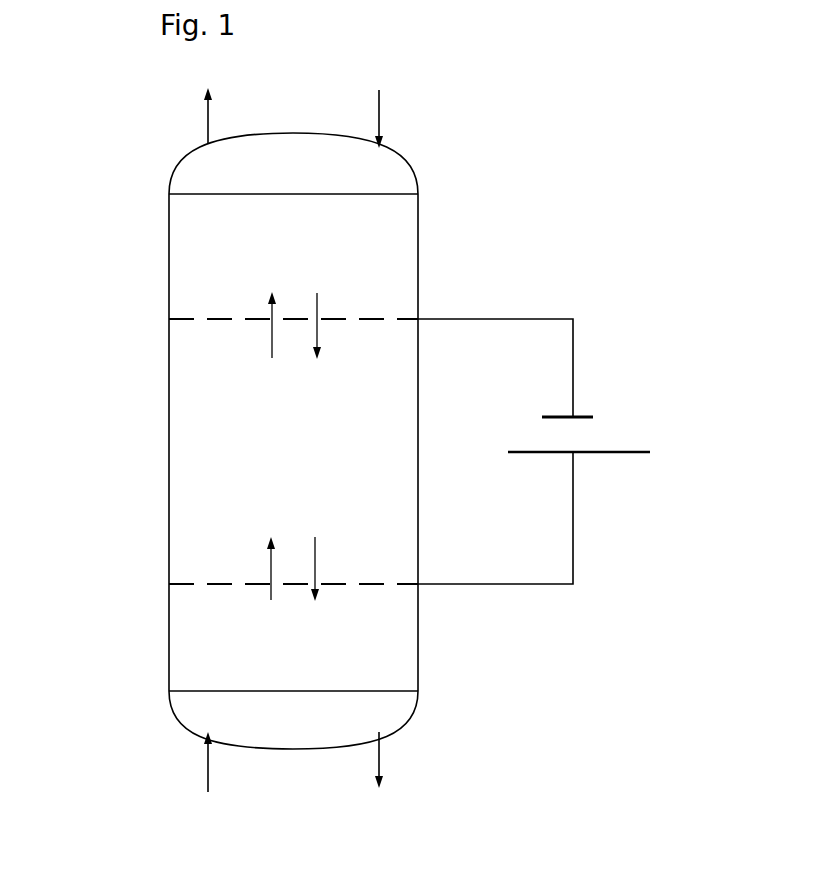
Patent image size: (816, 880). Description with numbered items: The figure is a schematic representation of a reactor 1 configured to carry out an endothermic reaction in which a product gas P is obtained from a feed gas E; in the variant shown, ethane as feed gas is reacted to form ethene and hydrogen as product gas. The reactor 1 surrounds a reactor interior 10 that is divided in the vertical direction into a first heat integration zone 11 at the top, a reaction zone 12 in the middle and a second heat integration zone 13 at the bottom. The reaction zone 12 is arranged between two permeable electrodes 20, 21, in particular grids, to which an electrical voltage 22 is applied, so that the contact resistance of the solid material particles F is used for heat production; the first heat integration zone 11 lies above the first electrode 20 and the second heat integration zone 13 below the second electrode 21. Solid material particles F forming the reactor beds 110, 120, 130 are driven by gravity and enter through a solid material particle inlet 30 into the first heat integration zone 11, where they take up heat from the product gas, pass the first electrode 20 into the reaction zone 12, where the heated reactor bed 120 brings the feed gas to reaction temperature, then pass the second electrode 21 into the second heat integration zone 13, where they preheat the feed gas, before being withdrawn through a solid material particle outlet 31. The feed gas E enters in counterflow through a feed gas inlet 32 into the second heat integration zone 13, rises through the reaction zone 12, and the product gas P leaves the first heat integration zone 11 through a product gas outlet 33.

The reactor 1 is at (114, 222).
The reactor interior 10 is at (276, 255).
The first heat integration zone 11 is at (367, 248).
The reactor bed 110 is at (365, 300).
The reaction zone 12 is at (360, 397).
The reactor bed 120 is at (383, 488).
The second heat integration zone 13 is at (377, 633).
The reactor bed 130 is at (360, 615).
The first electrode 20 is at (167, 319).
The second electrode 21 is at (168, 582).
The electrical voltage 22 is at (608, 431).
The solid material particle inlet 30 is at (382, 115).
The solid material particle outlet 31 is at (382, 735).
The feed gas inlet 32 is at (202, 757).
The product gas outlet 33 is at (202, 115).